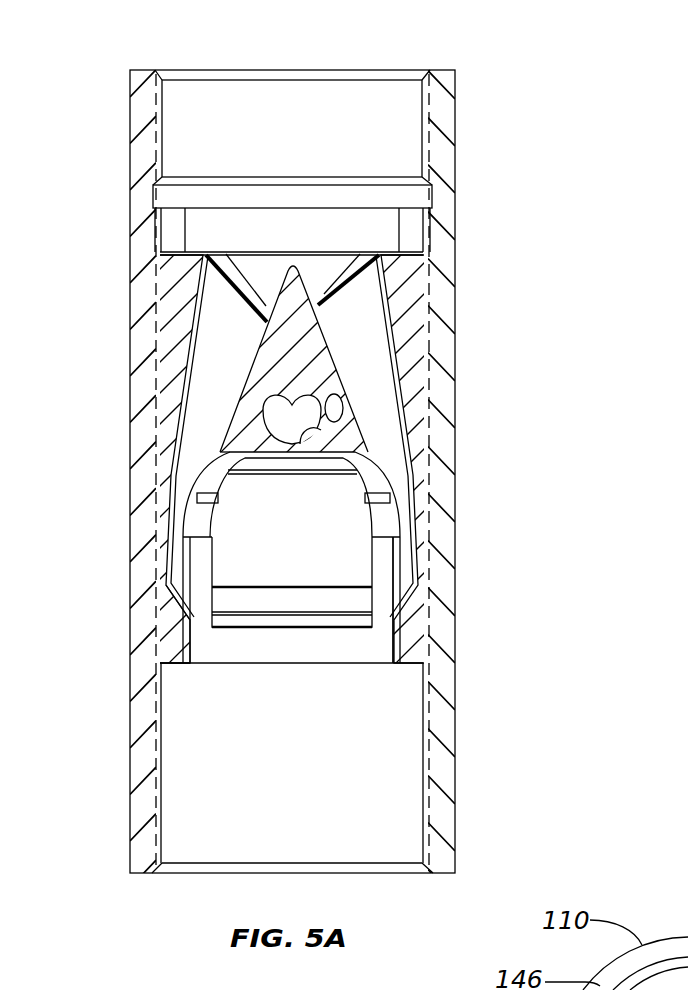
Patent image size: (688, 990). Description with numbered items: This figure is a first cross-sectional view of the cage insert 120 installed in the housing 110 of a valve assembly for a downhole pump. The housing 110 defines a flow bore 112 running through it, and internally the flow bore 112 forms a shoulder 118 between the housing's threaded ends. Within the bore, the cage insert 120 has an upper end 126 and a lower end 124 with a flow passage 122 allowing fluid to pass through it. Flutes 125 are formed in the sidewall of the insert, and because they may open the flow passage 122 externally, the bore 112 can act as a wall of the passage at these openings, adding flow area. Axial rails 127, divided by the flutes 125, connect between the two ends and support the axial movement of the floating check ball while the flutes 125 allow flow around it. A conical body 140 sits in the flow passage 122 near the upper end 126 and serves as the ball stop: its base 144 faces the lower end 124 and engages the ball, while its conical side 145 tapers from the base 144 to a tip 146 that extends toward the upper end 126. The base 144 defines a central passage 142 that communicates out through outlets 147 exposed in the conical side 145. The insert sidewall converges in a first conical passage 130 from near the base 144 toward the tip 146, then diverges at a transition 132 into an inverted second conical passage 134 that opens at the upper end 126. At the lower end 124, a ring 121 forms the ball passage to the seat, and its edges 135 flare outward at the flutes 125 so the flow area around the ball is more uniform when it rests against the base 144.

The housing 110 is at (129, 150).
The flow bore 112 is at (353, 104).
The shoulder 118 is at (402, 235).
The upper end 126 is at (407, 252).
The tip 146 is at (298, 262).
The second conical passage 134 is at (262, 272).
The conical side 145 is at (268, 332).
The transition 132 is at (320, 303).
The first conical passage 130 is at (190, 372).
The conical body 140 is at (338, 340).
The outlets 147 is at (330, 396).
The central passage 142 is at (360, 457).
The flutes 125 is at (168, 502).
The base 144 is at (247, 460).
The axial rails 127 is at (370, 567).
The edges 135 is at (405, 583).
The ring 121 is at (170, 642).
The lower end 124 is at (175, 665).
The flow passage 122 is at (336, 603).
The cage insert 120 is at (356, 676).